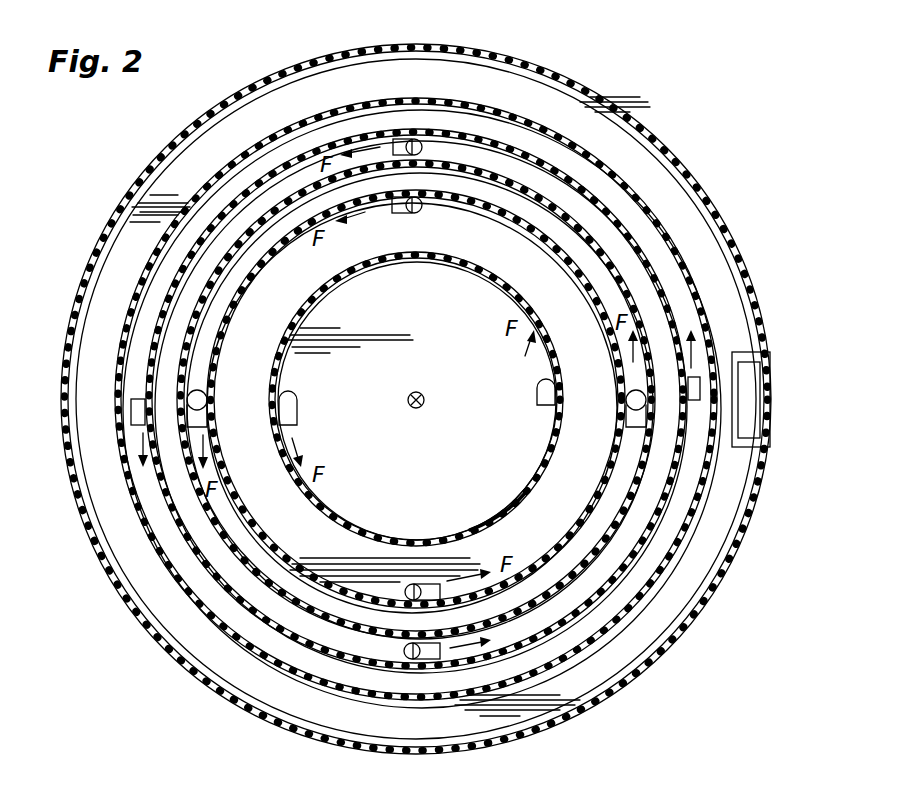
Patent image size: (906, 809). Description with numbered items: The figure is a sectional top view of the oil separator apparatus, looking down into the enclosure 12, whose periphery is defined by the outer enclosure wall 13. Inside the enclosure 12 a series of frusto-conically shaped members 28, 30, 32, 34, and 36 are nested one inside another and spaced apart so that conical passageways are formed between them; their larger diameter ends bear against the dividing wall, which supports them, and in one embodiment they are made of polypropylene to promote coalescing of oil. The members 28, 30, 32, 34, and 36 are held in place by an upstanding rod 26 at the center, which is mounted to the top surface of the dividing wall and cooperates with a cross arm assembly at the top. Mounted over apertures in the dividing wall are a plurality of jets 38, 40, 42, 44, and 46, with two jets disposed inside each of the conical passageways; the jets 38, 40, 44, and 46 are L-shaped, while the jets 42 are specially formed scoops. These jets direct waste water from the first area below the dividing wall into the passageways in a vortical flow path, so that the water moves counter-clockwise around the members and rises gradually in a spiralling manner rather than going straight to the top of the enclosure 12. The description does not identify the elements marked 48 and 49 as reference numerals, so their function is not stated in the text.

The enclosure 12 is at (598, 96).
The outer enclosure wall 13 is at (670, 163).
The upstanding rod 26 is at (414, 410).
The frusto-conically shaped member 28 is at (690, 262).
The frusto-conically shaped member 30 is at (238, 602).
The frusto-conically shaped member 32 is at (608, 538).
The frusto-conically shaped member 34 is at (520, 222).
The frusto-conically shaped member 36 is at (482, 527).
The jet 38 is at (298, 393).
The jet 40 is at (205, 395).
The jet 42 is at (137, 407).
The jet 44 is at (412, 214).
The jet 46 is at (414, 139).
The bracket 48 is at (748, 355).
The bracket inner portion 49 is at (748, 420).